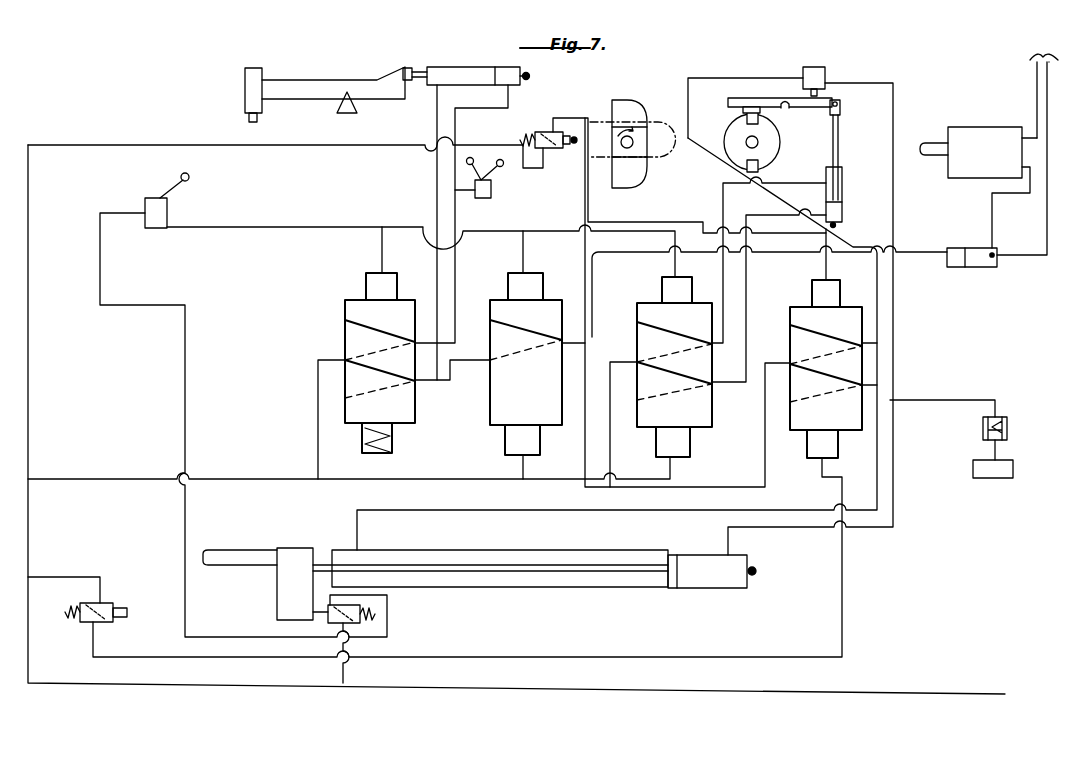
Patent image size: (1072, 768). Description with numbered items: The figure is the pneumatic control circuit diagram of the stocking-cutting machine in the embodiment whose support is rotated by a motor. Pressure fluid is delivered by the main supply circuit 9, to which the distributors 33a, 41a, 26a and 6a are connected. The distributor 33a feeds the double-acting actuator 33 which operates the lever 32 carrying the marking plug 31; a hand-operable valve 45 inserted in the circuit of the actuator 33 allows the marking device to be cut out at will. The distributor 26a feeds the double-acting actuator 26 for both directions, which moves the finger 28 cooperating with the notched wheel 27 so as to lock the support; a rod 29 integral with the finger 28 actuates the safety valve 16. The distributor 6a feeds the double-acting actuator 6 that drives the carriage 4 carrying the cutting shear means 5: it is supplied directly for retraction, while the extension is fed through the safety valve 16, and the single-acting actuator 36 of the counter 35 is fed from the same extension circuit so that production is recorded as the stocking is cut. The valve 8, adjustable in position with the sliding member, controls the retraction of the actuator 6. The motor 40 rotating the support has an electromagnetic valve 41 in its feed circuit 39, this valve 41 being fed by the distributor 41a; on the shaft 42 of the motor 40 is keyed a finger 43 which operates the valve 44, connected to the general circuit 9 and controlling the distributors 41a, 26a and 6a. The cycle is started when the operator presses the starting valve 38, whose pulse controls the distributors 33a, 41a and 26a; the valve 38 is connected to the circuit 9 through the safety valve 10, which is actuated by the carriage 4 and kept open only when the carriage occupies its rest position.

The carriage or slide-rest 4 is at (293, 556).
The cutting shear means 5 is at (227, 556).
The double-acting actuator 6 is at (583, 586).
The distributor 6a is at (802, 310).
The valve 8 is at (101, 606).
The main supply circuit 9 is at (28, 469).
The safety valve 10 is at (351, 619).
The safety valve 16 is at (815, 66).
The double-acting actuator 26 is at (844, 192).
The distributor 26a is at (640, 305).
The cogged, notched or slotted wheel 27 is at (773, 137).
The finger 28 is at (745, 112).
The rod 29 is at (765, 106).
The marking plug 31 is at (252, 82).
The lever 32 is at (311, 88).
The double-acting actuator 33 is at (449, 66).
The distributor 33a is at (346, 306).
The counter 35 is at (1014, 468).
The single-acting actuator 36 is at (1008, 425).
The starting valve 38 is at (164, 210).
The feed circuit 39 is at (1044, 85).
The motor 40 is at (973, 127).
The electromagnetic valve 41 is at (978, 264).
The distributor 41a is at (492, 303).
The shaft 42 is at (930, 142).
The finger 43 is at (633, 111).
The valve 44 is at (556, 150).
The hand-operable valve 45 is at (492, 190).